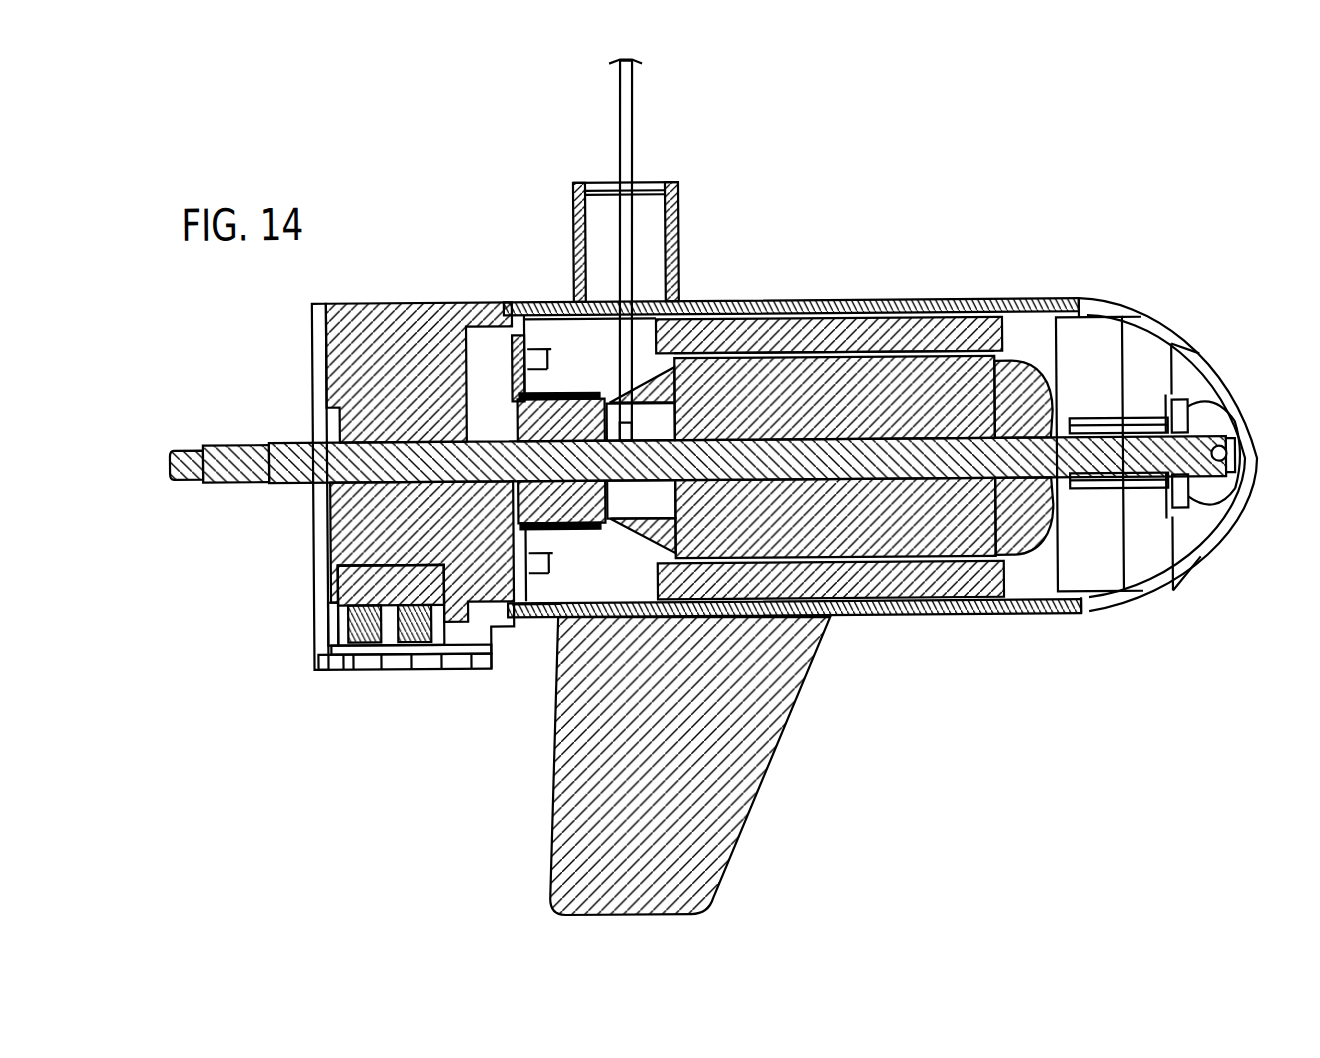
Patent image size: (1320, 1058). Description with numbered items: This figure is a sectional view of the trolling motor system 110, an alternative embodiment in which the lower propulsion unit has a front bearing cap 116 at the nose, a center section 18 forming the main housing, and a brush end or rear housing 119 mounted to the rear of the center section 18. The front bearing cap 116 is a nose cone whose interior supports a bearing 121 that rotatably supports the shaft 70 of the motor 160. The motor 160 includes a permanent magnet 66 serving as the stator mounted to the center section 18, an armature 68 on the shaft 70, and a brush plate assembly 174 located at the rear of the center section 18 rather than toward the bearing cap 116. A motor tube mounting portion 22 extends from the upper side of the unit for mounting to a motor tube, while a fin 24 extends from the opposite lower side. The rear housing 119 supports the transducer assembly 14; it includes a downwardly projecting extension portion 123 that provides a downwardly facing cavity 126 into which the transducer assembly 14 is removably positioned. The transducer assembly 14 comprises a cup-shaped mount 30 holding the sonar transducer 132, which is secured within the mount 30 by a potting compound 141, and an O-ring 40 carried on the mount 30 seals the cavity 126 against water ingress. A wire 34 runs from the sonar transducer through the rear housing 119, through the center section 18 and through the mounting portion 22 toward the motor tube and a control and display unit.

The trolling motor system 110 is at (986, 197).
The transducer assembly 14 is at (413, 661).
The center section 18 is at (886, 620).
The motor tube mounting portion 22 is at (680, 240).
The fin 24 is at (786, 694).
The mount 30 is at (384, 659).
The wire 34 is at (634, 150).
The O-ring 40 is at (333, 631).
The permanent magnet 66 is at (985, 582).
The armature 68 is at (825, 379).
The shaft 70 is at (1140, 475).
The front bearing cap 116 is at (1160, 333).
The rear housing 119 is at (437, 301).
The bearing 121 is at (1205, 427).
The extension portion 123 is at (318, 619).
The cavity 126 is at (340, 612).
The sonar transducer 132 is at (418, 635).
The potting compound 141 is at (360, 569).
The motor 160 is at (1023, 352).
The brush plate assembly 174 is at (531, 336).